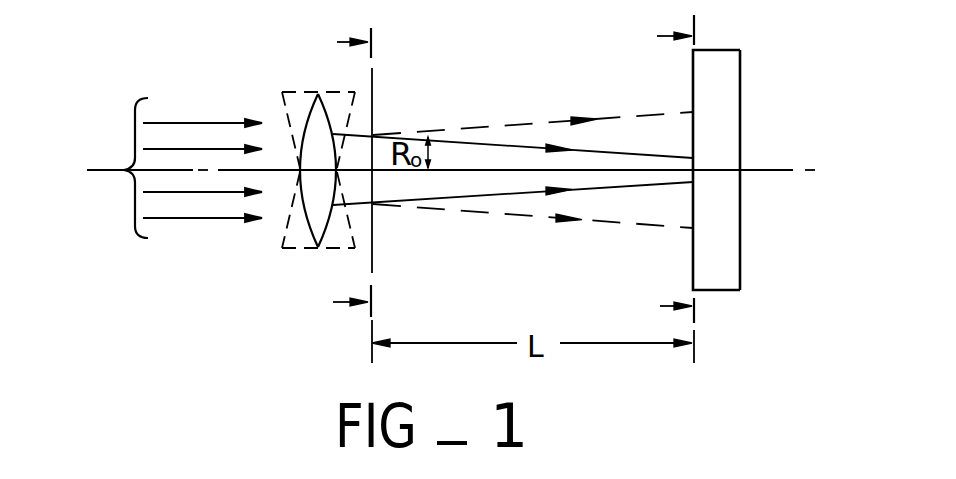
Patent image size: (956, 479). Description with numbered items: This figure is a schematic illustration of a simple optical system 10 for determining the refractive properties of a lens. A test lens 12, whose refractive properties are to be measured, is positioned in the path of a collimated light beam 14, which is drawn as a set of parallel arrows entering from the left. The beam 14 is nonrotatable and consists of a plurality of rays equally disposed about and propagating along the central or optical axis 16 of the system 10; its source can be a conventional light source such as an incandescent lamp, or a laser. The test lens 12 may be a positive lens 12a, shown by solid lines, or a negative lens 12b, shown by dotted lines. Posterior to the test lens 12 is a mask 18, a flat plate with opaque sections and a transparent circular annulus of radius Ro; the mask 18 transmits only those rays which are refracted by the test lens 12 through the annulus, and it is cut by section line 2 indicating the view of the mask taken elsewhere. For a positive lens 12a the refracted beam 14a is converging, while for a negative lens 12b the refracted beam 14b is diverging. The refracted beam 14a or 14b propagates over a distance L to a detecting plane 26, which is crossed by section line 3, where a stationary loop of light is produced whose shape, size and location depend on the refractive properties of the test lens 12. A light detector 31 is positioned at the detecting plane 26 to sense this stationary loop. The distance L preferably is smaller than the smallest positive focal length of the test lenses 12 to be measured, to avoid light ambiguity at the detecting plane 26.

The section line 2- 2 is at (344, 175).
The section line 3- 3 is at (663, 177).
The optical system 10 is at (478, 68).
The test lens 12 is at (281, 68).
The positive lens 12a is at (310, 226).
The negative lens 12b is at (311, 250).
The collimated light beam 14 is at (199, 95).
The refracted beam (converging) 14a is at (616, 154).
The refracted beam (diverging) 14b is at (525, 123).
The optical axis 16 is at (107, 167).
The mask 18 is at (373, 248).
The detecting plane 26 is at (693, 83).
The light detector 31 is at (743, 252).